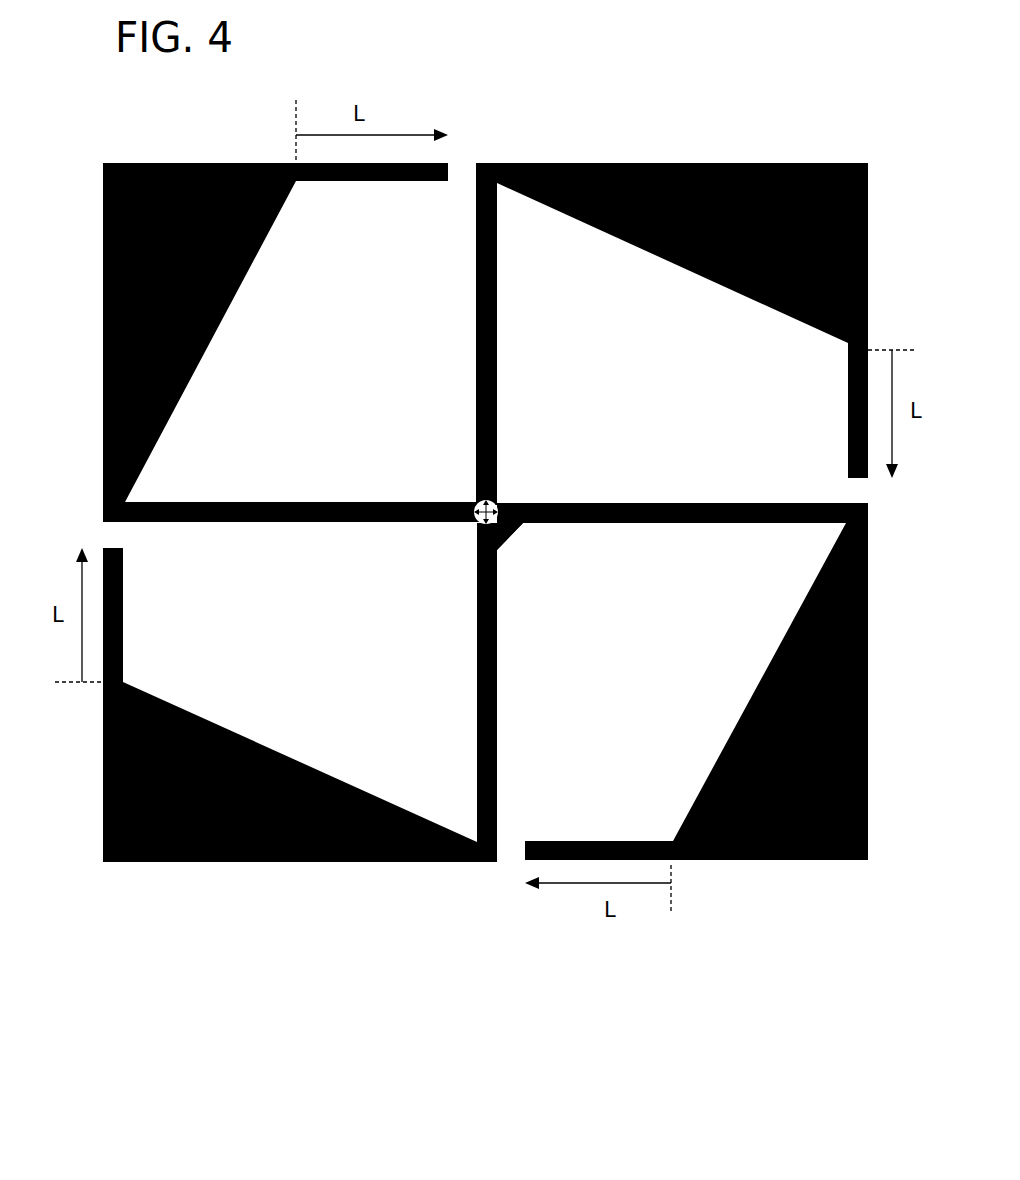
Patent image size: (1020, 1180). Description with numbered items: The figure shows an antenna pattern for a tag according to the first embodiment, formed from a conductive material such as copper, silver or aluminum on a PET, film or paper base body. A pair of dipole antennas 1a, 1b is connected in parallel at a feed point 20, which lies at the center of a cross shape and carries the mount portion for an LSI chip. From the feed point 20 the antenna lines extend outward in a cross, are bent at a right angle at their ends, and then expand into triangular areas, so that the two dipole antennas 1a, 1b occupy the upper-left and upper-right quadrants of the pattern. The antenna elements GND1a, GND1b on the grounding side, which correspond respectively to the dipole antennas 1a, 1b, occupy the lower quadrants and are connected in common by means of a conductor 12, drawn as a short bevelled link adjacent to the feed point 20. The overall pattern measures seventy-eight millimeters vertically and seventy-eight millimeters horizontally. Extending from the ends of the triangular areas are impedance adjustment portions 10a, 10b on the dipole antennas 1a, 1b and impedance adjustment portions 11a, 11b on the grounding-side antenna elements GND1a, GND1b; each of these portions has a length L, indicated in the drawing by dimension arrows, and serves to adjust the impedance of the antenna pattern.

The dipole antenna 1a is at (103, 240).
The dipole antenna 1b is at (608, 163).
The impedance adjustment portion 10a is at (387, 181).
The impedance adjustment portion 10b is at (848, 417).
The impedance adjustment portion 11a is at (597, 841).
The impedance adjustment portion 11b is at (123, 610).
The conductor 12 is at (510, 537).
The feed point 20 is at (477, 618).
The antenna element on the grounding side GND1a is at (768, 860).
The antenna element on the grounding side GND1b is at (132, 862).